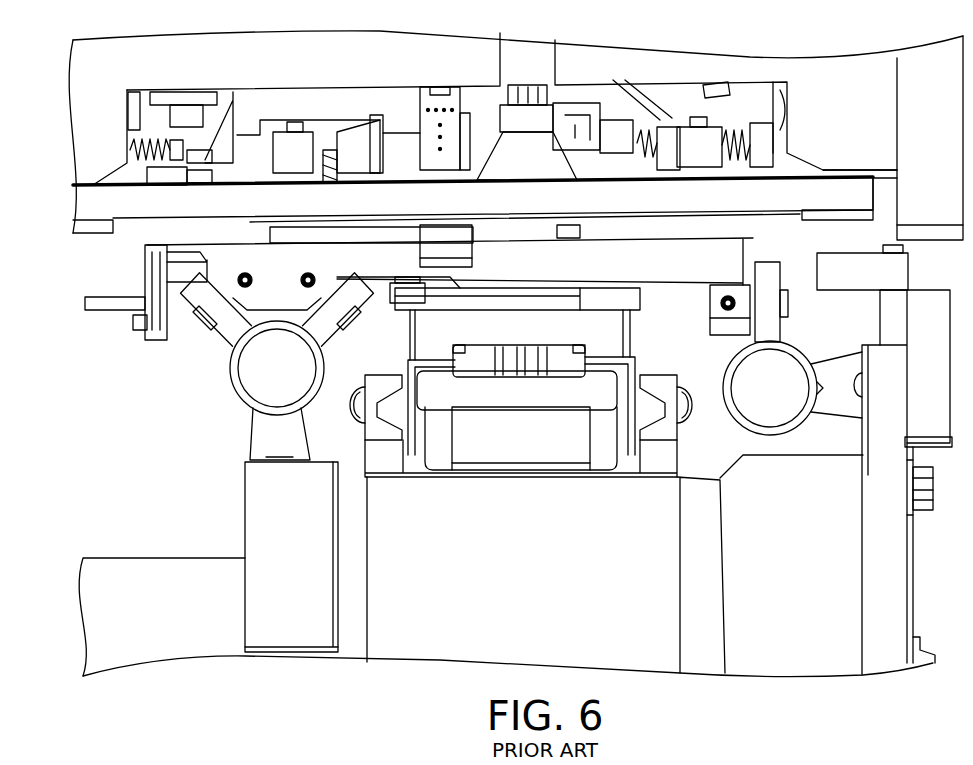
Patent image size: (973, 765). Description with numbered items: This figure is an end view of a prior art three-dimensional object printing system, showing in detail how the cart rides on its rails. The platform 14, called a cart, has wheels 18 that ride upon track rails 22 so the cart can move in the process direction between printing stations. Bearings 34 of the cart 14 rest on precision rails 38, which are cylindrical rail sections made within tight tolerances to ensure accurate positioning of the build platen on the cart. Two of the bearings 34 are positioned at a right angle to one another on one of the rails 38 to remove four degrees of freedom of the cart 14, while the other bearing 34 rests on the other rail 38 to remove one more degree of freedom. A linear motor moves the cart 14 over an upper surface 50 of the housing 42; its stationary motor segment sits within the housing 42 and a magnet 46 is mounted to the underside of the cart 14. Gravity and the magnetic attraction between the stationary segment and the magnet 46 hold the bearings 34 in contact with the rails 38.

The platform 14 is at (740, 238).
The wheels 18 is at (385, 375).
The track rails 22 is at (365, 443).
The bearings 34 is at (217, 297).
The precision rails 38 is at (237, 390).
The housing 42 is at (455, 622).
The magnet 46 is at (507, 438).
The upper surface 50 is at (515, 477).